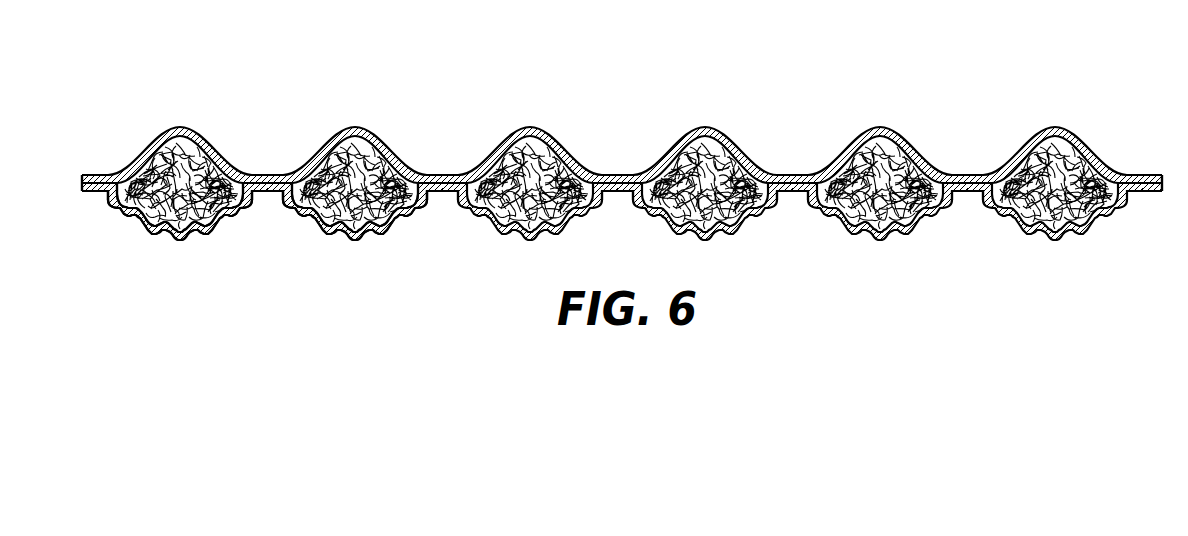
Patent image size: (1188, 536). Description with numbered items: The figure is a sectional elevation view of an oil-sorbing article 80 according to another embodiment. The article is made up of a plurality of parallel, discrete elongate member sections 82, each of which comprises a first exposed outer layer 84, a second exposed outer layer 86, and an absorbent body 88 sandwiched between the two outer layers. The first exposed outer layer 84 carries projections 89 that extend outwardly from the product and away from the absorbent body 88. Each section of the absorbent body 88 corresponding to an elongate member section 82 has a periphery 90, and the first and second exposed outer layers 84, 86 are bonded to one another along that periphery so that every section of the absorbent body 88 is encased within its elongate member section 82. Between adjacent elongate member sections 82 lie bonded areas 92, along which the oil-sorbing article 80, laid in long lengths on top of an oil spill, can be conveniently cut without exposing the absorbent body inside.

The oil-sorbing article 80 is at (649, 55).
The elongate member sections 82 is at (181, 127).
The first exposed outer layer 84 is at (187, 242).
The second exposed outer layer 86 is at (133, 173).
The absorbent body 88 is at (320, 233).
The projections 89 is at (393, 242).
The periphery 90 is at (110, 195).
The bonded areas 92 is at (270, 172).